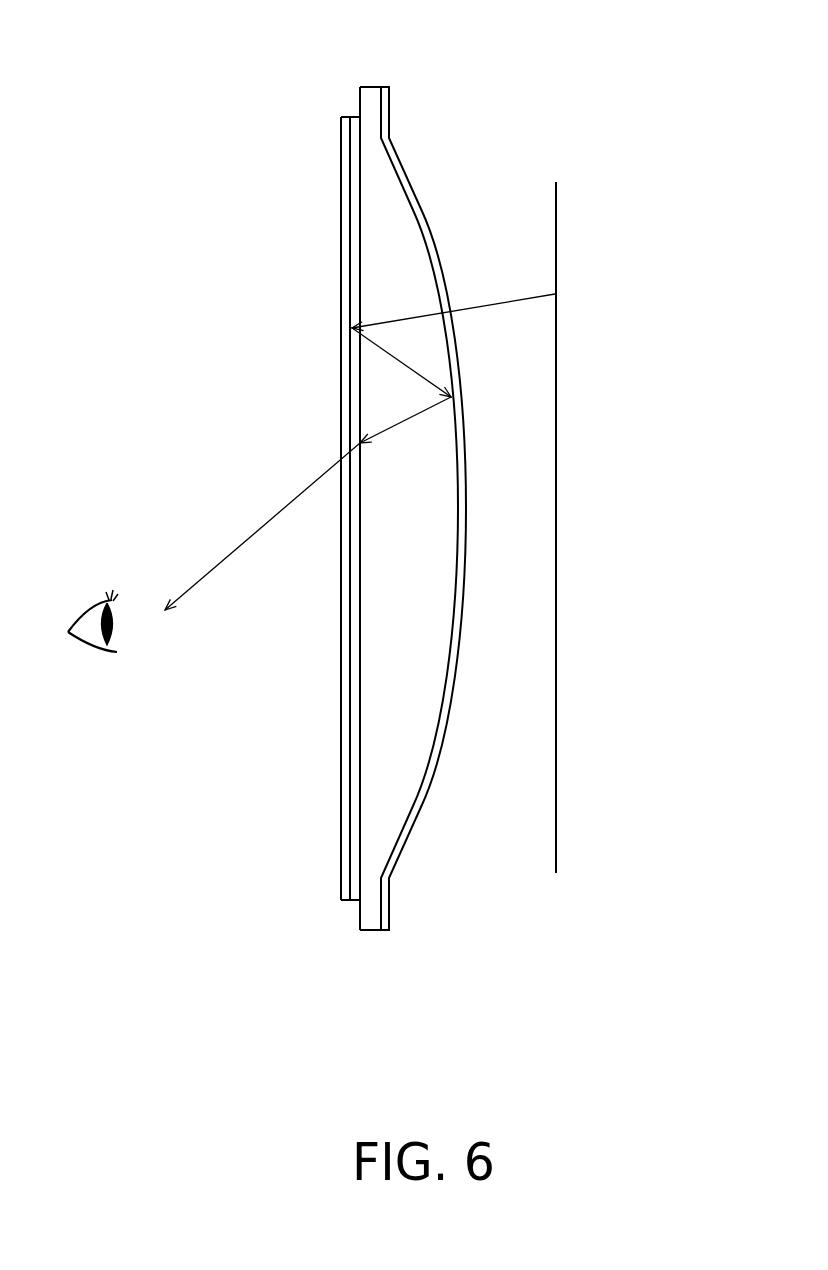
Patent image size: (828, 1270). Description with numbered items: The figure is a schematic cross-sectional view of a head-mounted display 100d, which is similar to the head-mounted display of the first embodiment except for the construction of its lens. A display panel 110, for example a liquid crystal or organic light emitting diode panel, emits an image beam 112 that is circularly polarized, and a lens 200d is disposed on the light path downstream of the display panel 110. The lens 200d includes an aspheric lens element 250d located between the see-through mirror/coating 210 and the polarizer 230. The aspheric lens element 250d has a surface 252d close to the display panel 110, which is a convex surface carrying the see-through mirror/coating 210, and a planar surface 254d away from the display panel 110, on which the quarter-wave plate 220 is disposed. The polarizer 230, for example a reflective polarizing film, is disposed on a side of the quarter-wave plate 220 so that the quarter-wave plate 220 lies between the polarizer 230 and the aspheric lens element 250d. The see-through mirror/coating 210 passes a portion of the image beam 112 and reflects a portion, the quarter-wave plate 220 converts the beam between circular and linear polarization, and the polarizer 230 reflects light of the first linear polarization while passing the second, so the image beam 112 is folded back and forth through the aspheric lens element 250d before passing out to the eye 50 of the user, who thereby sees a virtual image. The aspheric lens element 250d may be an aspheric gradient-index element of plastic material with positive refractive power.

The eye 50 is at (92, 640).
The head-mounted display 100d is at (675, 964).
The display panel 110 is at (557, 485).
The image beam 112 is at (503, 302).
The lens 200d is at (253, 810).
The see-through mirror/coating 210 is at (410, 830).
The quarter-wave plate 220 is at (355, 890).
The polarizer 230 is at (345, 885).
The aspheric lens element 250d is at (372, 95).
The surface 252d is at (457, 542).
The surface 254d is at (360, 628).